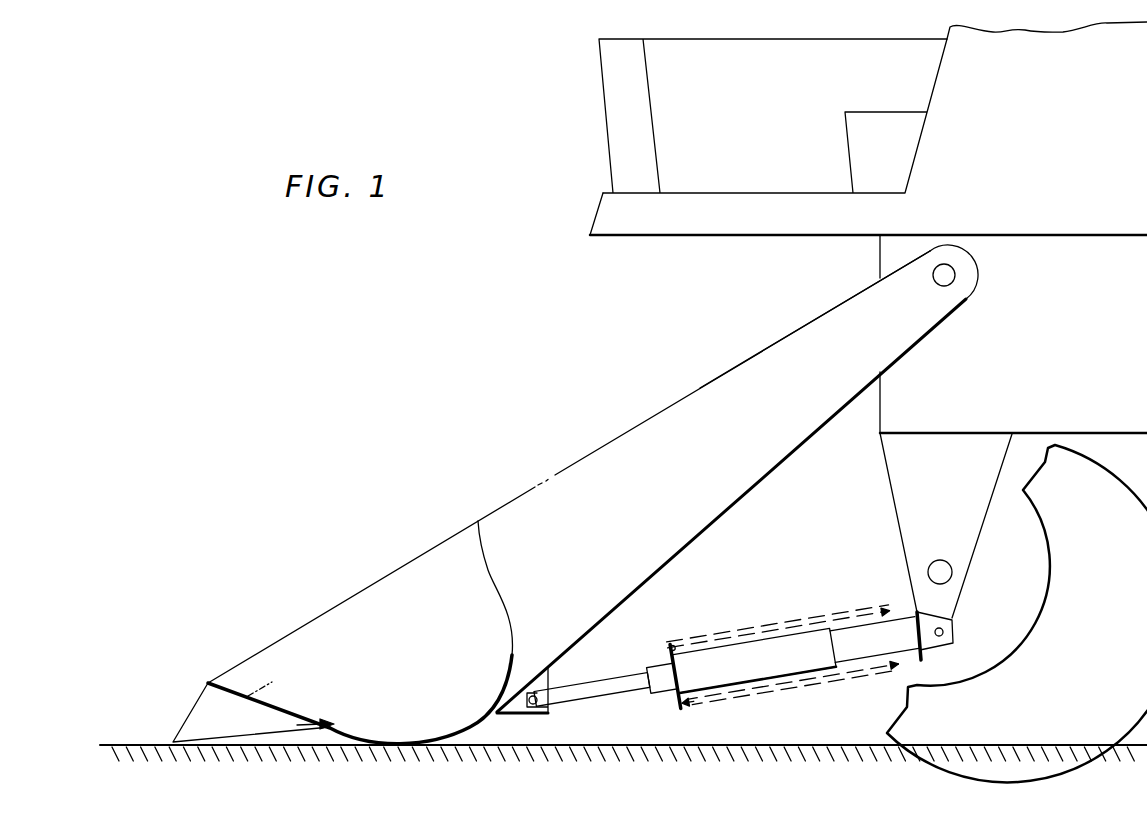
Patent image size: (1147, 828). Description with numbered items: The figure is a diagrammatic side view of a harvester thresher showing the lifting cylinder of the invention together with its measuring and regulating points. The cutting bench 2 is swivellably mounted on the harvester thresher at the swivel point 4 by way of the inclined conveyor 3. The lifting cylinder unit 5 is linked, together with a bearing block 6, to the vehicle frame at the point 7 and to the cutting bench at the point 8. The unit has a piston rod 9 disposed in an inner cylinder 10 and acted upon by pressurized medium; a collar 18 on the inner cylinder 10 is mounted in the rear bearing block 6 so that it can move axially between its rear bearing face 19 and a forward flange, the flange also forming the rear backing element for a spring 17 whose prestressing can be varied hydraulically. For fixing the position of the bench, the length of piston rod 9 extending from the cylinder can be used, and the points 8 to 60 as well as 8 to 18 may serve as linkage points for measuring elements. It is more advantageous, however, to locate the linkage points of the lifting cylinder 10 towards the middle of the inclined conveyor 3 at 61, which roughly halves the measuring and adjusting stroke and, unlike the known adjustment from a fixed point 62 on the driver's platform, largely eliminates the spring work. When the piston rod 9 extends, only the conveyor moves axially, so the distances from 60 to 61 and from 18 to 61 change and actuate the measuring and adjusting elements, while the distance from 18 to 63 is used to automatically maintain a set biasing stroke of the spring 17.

The cutting bench 2 is at (332, 622).
The inclined conveyor 3 is at (585, 466).
The swivel mounting point 4 is at (946, 275).
The lifting cylinder unit 5 is at (753, 612).
The bearing block 6 is at (912, 613).
The vehicle frame linkage point 7 is at (950, 626).
The cutting bench linkage point 8 is at (532, 719).
The piston rod 9 is at (604, 692).
The inner cylinder 10 is at (850, 636).
The spring 17 is at (676, 648).
The collar 18 is at (852, 645).
The rear bearing face 19 is at (925, 653).
The measuring point 60 is at (657, 690).
The linkage point on inclined conveyor 61 is at (673, 423).
The fixed point on driver's platform 62 is at (634, 215).
The measuring point 63 is at (672, 660).